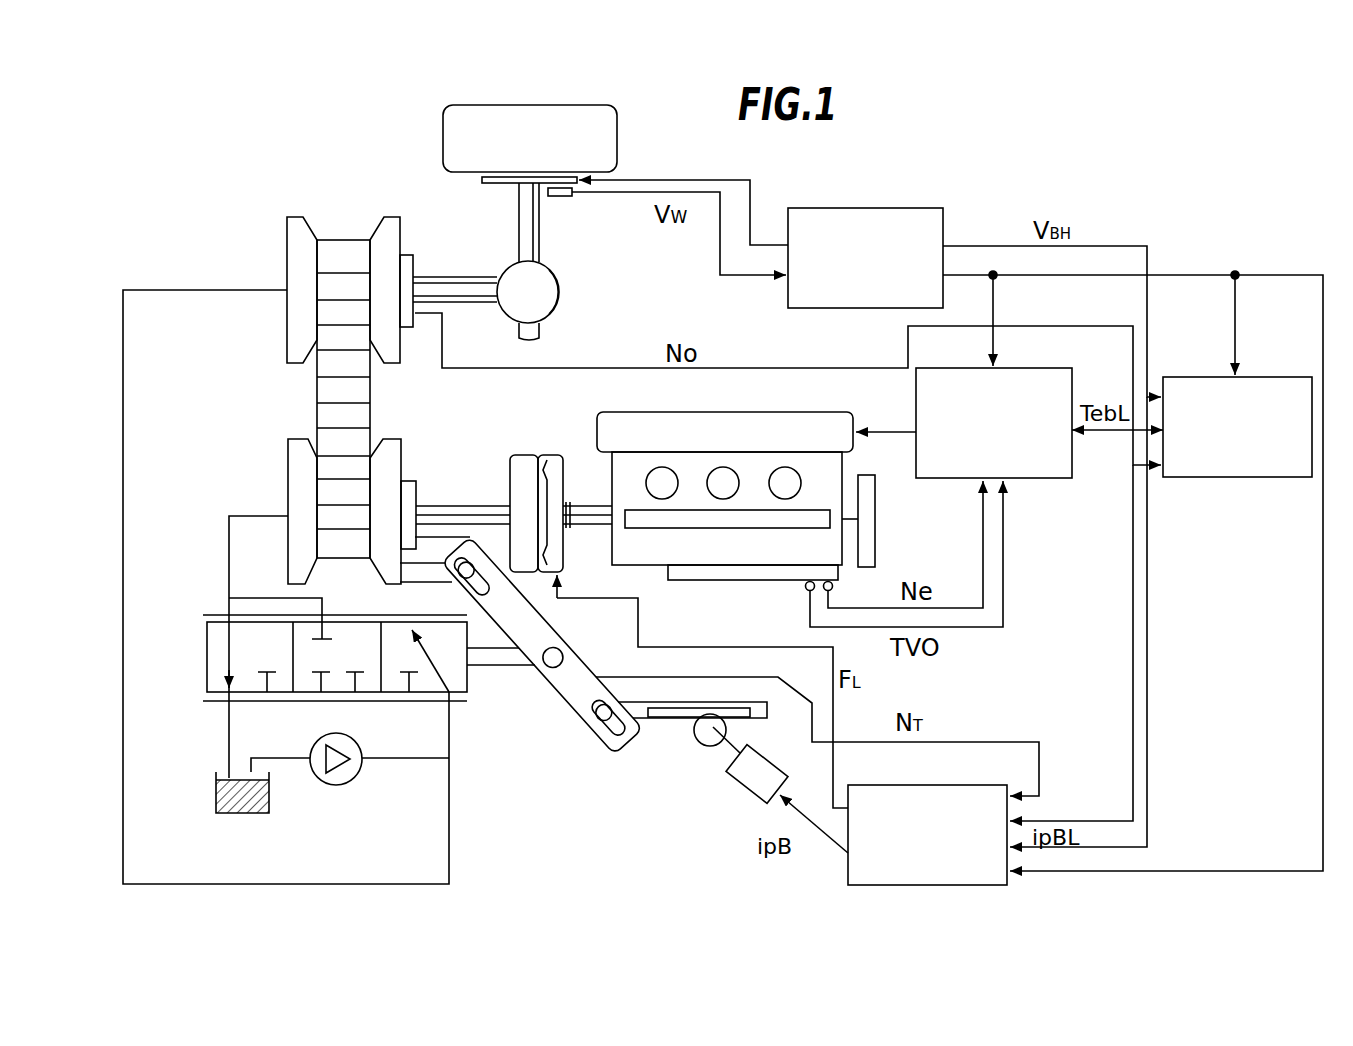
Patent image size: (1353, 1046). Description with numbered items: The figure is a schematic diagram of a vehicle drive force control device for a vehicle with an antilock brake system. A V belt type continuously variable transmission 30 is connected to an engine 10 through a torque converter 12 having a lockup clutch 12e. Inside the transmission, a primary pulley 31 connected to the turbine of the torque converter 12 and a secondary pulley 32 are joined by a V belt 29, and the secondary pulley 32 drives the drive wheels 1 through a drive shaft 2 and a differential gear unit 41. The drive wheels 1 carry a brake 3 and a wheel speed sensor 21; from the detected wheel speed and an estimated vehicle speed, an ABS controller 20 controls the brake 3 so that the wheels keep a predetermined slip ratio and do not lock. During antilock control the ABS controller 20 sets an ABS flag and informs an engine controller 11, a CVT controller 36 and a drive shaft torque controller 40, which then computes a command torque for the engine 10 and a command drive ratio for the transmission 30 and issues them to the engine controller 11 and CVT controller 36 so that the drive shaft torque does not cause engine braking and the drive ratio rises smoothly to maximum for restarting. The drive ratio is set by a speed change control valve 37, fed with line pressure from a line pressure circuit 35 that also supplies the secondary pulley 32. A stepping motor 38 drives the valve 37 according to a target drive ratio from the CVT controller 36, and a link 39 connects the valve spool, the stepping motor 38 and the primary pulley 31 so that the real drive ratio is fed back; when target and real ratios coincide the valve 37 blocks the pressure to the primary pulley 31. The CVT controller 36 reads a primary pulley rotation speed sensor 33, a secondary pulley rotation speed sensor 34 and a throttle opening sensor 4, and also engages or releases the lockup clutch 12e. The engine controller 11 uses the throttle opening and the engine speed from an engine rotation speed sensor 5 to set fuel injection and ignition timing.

The drive wheels 1 is at (449, 136).
The drive shaft 2 is at (457, 277).
The brake 3 is at (567, 176).
The throttle opening sensor 4 is at (806, 590).
The engine rotation speed sensor 5 is at (834, 588).
The engine 10 is at (730, 543).
The engine controller 11 is at (1055, 368).
The torque converter 12 is at (513, 455).
The lockup clutch 12e is at (550, 458).
The ABS controller 20 is at (862, 208).
The wheel speed sensor 21 is at (562, 197).
The V belt 29 is at (317, 395).
The continuously variable transmission 30 is at (282, 214).
The primary pulley 31 is at (288, 463).
The secondary pulley 32 is at (285, 258).
The primary pulley rotation speed sensor 33 is at (410, 498).
The secondary pulley rotation speed sensor 34 is at (413, 258).
The line pressure circuit 35 is at (325, 587).
The CVT controller 36 is at (853, 887).
The speed change control valve 37 is at (468, 681).
The stepping motor 38 is at (737, 785).
The link 39 is at (621, 744).
The drive shaft torque controller 40 is at (1268, 377).
The differential gear unit 41 is at (560, 290).